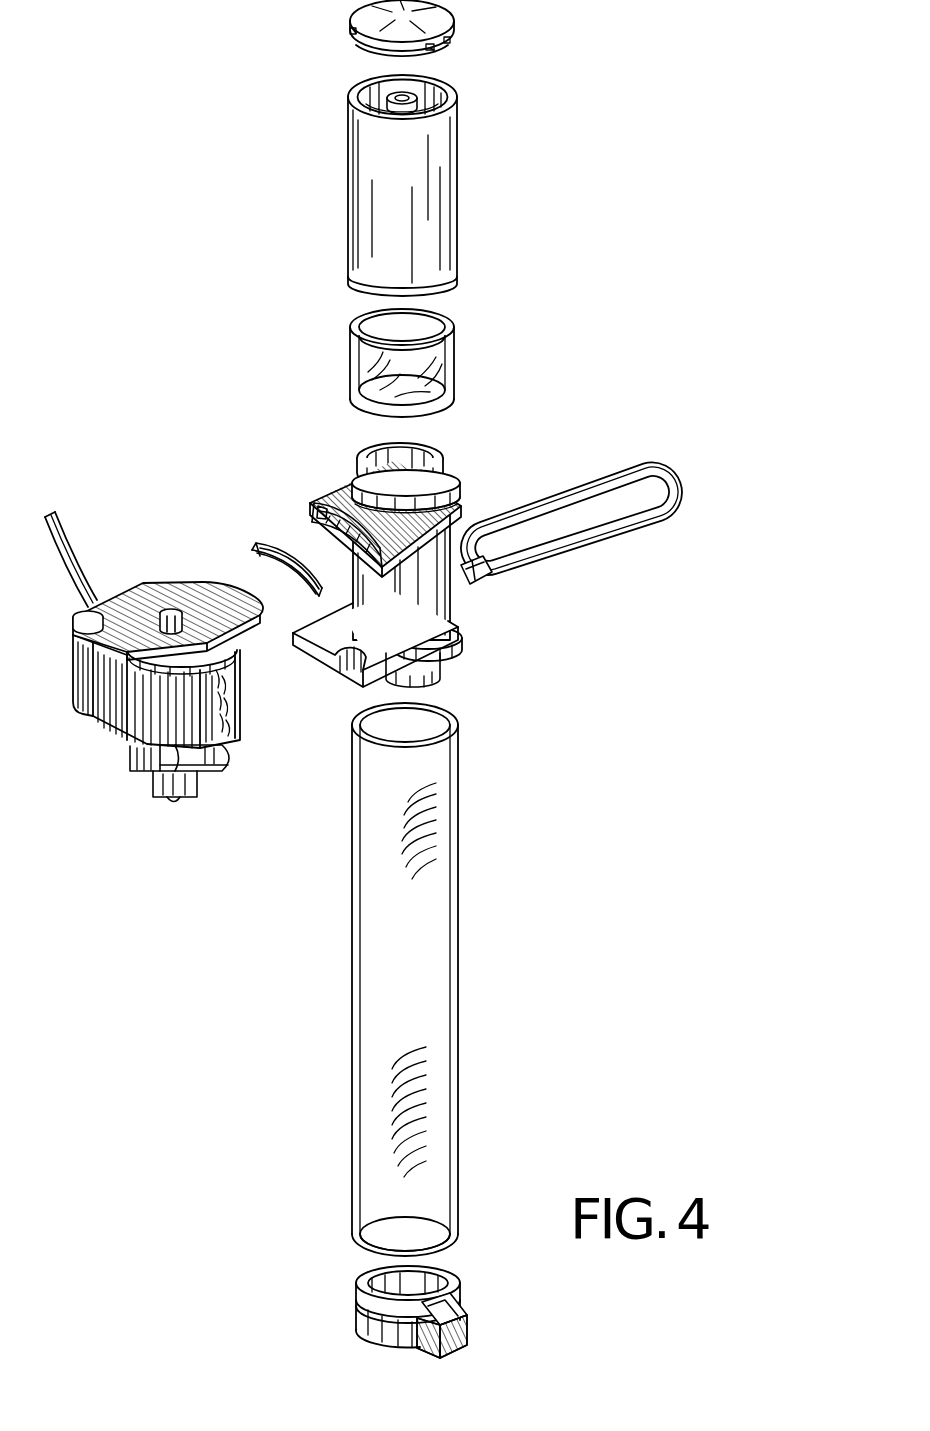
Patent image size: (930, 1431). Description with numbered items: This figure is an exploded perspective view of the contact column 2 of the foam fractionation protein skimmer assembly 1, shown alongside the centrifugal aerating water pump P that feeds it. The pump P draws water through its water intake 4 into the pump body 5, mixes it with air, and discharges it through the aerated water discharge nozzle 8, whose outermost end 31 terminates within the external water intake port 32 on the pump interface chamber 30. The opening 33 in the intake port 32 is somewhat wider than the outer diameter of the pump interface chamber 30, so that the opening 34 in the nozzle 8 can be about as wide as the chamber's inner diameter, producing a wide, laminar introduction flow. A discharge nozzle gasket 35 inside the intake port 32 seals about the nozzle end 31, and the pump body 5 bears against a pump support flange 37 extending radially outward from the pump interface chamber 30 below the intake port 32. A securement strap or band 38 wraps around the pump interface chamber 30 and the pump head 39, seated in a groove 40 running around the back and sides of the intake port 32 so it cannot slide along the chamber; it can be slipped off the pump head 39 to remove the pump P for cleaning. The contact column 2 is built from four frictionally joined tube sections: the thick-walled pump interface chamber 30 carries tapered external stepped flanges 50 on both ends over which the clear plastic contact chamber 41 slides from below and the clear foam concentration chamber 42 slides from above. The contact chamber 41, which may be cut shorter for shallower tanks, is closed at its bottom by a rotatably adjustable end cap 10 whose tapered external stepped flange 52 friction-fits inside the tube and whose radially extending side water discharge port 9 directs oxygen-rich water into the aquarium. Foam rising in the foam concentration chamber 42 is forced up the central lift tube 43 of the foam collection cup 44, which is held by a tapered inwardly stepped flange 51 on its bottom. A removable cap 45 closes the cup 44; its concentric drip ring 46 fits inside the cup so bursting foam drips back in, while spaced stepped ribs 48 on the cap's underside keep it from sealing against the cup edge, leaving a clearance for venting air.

The foam fractionation protein skimmer assembly 1 is at (320, 304).
The contact column 2 is at (322, 824).
The water intake 4 is at (162, 790).
The pump body 5 is at (157, 757).
The aerated water discharge nozzle 8 is at (140, 626).
The side water discharge port 9 is at (470, 1330).
The end cap 10 is at (450, 1293).
The pump interface chamber 30 is at (392, 575).
The outermost end 31 is at (212, 580).
The water intake port 32 is at (347, 492).
The opening 33 is at (313, 517).
The opening 34 is at (233, 583).
The discharge nozzle gasket 35 is at (305, 593).
The pump support flange 37 is at (416, 682).
The securement strap 38 is at (600, 473).
The pump head 39 is at (85, 550).
The groove 40 is at (456, 517).
The contact chamber 41 is at (460, 843).
The foam concentration chamber 42 is at (459, 358).
The central lift tube 43 is at (412, 96).
The foam collection cup 44 is at (447, 187).
The cap 45 is at (478, 2).
The drip ring 46 is at (375, 52).
The stepped ribs 48 is at (430, 53).
The external stepped flanges 50 is at (447, 467).
The inwardly stepped flange 51 is at (437, 289).
The external stepped flange 52 is at (360, 1295).
The centrifugal aerating water pump P is at (145, 655).